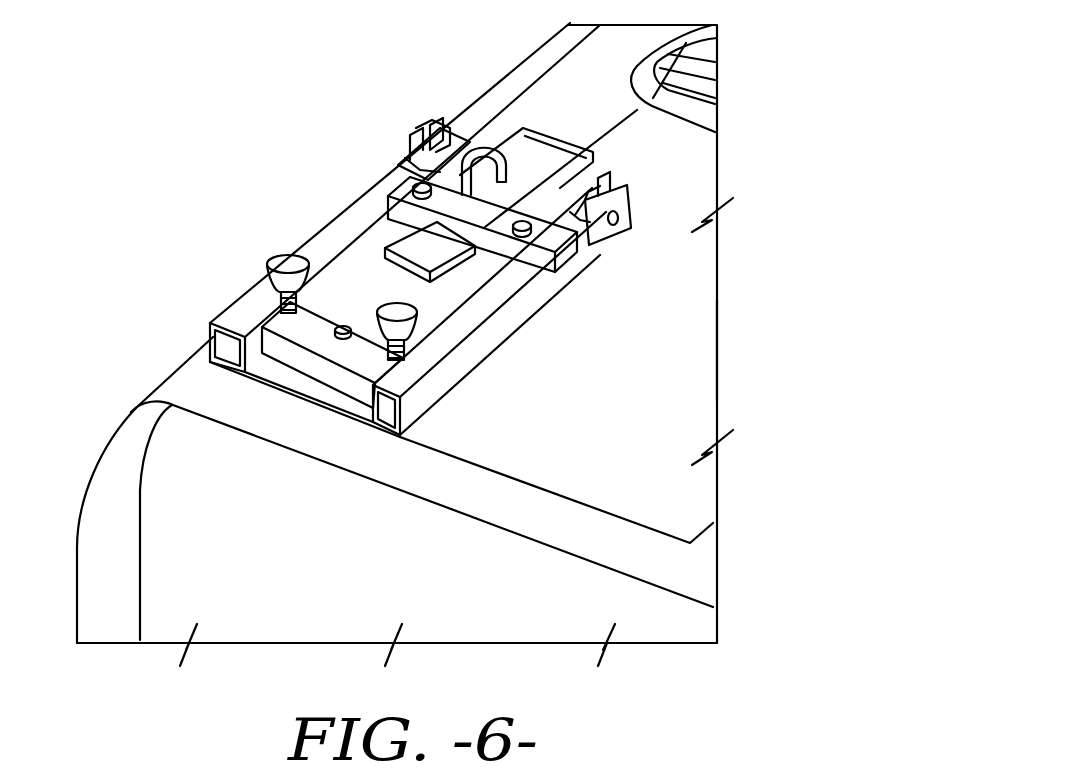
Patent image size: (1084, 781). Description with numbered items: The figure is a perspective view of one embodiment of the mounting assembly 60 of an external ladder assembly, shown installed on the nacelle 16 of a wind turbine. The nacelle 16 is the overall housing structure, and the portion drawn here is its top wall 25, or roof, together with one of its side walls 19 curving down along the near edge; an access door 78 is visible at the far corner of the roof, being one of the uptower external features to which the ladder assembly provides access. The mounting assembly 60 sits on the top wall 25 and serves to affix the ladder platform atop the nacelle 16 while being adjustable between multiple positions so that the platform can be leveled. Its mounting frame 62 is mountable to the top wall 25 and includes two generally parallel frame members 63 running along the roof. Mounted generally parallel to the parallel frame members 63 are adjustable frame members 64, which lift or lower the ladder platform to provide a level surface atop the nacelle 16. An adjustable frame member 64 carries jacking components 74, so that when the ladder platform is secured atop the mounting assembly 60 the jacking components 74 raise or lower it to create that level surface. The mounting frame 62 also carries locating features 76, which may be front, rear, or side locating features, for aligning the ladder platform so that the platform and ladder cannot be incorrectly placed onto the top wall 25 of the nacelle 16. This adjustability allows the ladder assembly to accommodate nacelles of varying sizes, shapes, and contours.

The nacelle 16 is at (520, 55).
The side walls 19 is at (278, 622).
The top wall 25 is at (688, 345).
The mounting assembly 60 is at (306, 229).
The mounting frame 62 is at (471, 367).
The parallel frame members 63 is at (380, 188).
The adjustable frame member 64 is at (433, 225).
The jacking component 74 is at (290, 265).
The locating feature 76 is at (432, 118).
The access door 78 is at (702, 38).